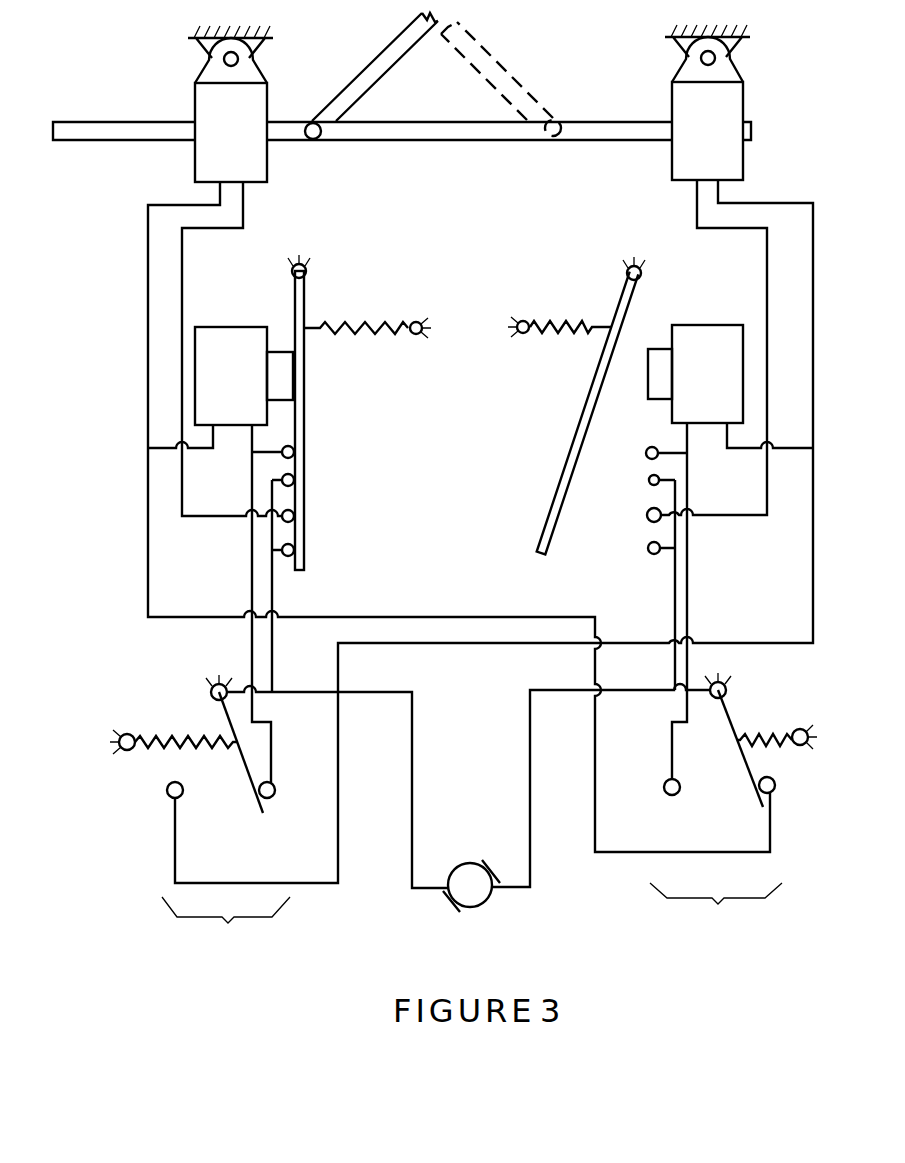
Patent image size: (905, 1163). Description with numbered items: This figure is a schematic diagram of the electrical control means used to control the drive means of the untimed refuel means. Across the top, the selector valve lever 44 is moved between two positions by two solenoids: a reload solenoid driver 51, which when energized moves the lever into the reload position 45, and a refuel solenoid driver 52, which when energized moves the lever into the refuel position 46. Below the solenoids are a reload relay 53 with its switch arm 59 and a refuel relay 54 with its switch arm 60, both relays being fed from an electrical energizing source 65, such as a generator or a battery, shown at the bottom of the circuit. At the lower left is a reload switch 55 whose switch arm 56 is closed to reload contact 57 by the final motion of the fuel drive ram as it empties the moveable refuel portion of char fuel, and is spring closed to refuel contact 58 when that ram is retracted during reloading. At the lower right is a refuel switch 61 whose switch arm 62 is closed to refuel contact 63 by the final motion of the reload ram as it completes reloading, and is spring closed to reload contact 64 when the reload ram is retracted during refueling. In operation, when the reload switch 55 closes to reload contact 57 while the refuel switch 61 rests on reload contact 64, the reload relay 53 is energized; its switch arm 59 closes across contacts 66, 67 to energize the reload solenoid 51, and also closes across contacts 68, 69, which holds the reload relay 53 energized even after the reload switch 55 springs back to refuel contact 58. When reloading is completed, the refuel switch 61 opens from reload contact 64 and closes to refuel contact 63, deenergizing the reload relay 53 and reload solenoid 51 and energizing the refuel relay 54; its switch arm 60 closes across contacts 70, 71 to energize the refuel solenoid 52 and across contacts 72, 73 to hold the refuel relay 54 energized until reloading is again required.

The selector valve lever 44 is at (378, 53).
The reload position 45 is at (309, 121).
The refuel position 46 is at (555, 119).
The reload solenoid driver 51 is at (268, 160).
The refuel solenoid driver 52 is at (672, 155).
The reload relay 53 is at (214, 327).
The refuel relay 54 is at (700, 325).
The reload switch 55 is at (226, 926).
The switch arm 56 is at (230, 728).
The reload contact 57 is at (275, 788).
The refuel contact 58 is at (168, 796).
The switch arm 59 is at (306, 396).
The switch arm 60 is at (578, 418).
The refuel switch 61 is at (716, 907).
The switch arm 62 is at (733, 715).
The refuel contact 63 is at (664, 794).
The reload contact 64 is at (776, 781).
The electrical energizing source 65 is at (489, 898).
The contact 66 is at (296, 551).
The contact 67 is at (296, 516).
The contact 68 is at (296, 452).
The contact 69 is at (296, 481).
The contact 70 is at (649, 521).
The contact 71 is at (651, 556).
The contact 72 is at (646, 457).
The contact 73 is at (650, 486).